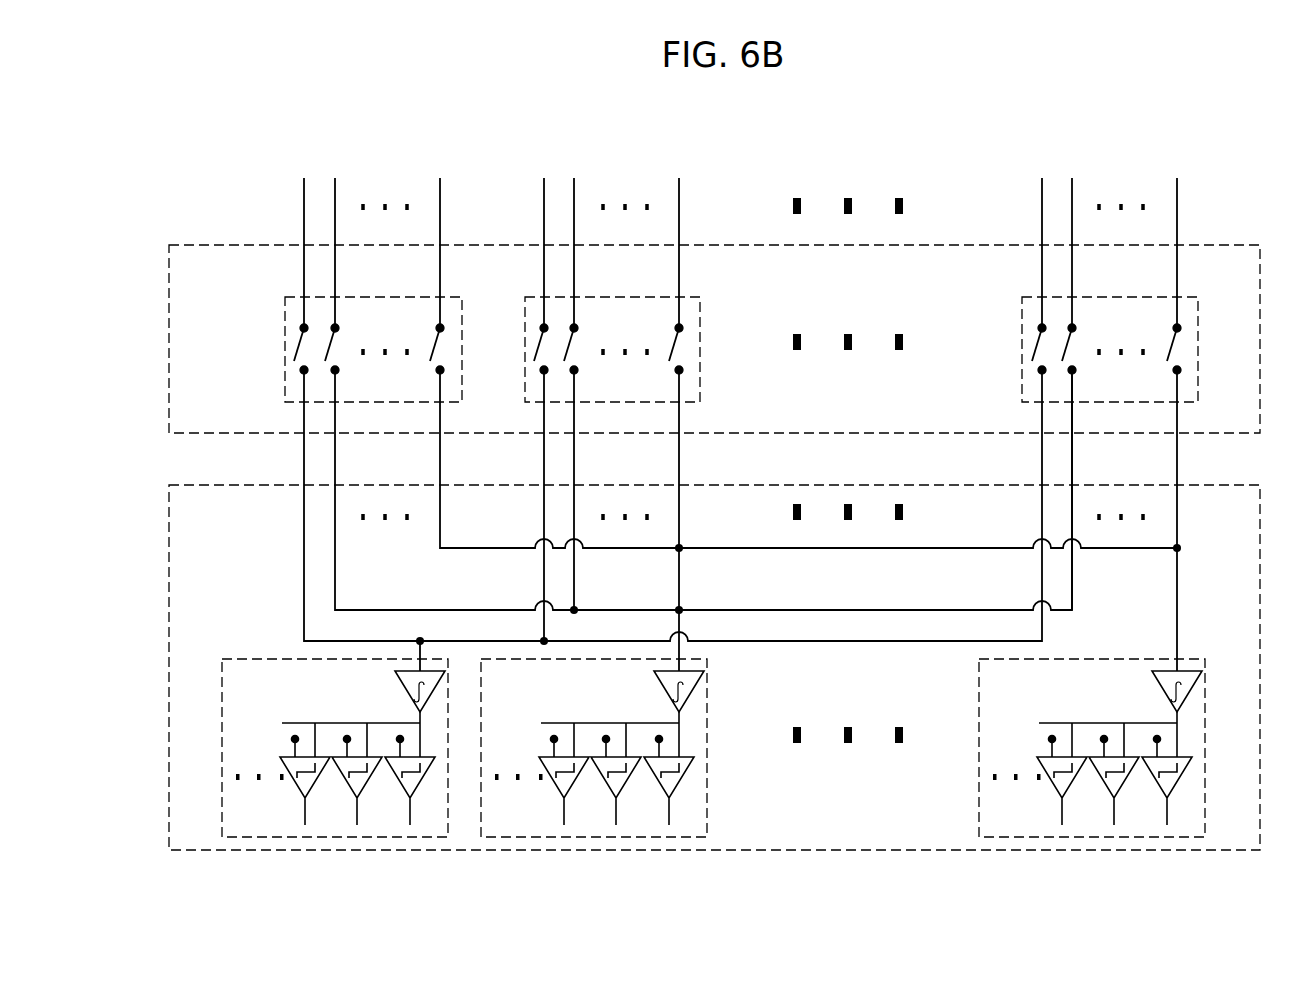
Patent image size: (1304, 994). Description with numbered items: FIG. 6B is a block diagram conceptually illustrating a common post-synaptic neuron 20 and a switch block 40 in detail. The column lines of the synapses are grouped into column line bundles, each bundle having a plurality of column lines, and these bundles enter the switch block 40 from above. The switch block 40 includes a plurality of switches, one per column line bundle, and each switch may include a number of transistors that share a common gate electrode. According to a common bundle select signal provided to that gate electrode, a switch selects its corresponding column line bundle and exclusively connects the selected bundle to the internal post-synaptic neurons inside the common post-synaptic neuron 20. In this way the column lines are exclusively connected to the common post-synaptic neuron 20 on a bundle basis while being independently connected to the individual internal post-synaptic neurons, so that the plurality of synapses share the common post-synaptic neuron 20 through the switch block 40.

The switch block 40 is at (719, 324).
The post-synaptic neuron 20 is at (719, 641).